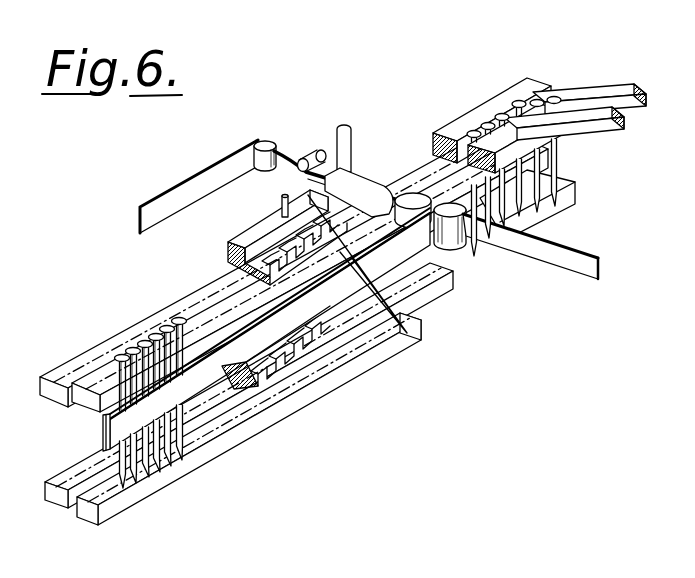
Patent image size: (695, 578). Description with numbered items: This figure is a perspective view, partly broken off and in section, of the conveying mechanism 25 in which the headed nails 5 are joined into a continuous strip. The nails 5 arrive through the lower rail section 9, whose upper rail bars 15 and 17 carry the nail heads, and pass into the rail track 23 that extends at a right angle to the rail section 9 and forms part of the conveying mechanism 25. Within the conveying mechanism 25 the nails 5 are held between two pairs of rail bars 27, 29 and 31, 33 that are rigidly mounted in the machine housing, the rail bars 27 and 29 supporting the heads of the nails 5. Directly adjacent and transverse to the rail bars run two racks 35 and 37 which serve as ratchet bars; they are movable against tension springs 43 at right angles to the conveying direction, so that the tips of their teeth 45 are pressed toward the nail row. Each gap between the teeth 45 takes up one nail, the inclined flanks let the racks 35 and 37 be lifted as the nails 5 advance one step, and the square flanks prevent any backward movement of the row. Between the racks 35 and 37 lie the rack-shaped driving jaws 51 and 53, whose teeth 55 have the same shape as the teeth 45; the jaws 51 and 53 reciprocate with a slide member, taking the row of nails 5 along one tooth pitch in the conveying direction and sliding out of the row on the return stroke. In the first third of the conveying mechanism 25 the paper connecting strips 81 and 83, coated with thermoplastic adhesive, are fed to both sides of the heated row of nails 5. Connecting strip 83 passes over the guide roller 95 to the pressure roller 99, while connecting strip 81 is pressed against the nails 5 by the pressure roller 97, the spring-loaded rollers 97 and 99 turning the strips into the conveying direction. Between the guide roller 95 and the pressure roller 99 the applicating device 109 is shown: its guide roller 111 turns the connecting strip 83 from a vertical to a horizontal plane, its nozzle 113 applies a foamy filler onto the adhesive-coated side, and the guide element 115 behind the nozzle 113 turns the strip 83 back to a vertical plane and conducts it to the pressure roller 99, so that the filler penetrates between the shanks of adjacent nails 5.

The nails 5 is at (537, 100).
The lower rail section 9 is at (597, 90).
The upper rail bar 15 is at (608, 120).
The upper rail bar 17 is at (638, 99).
The rail track 23 is at (465, 140).
The conveying mechanism 25 is at (430, 115).
The rail bar 27 is at (57, 370).
The rail bar 29 is at (95, 371).
The rail bar 31 is at (57, 497).
The rail bar 33 is at (87, 514).
The rack 35 is at (282, 296).
The rack 37 is at (276, 393).
The spring 43 is at (306, 208).
The teeth 45 is at (300, 248).
The driving jaw 51 is at (232, 273).
The driving jaw 53 is at (261, 388).
The teeth 55 is at (378, 277).
The connecting strip 81 is at (568, 254).
The connecting strip 83 is at (181, 183).
The guide roller 95 is at (265, 141).
The pressure roller 97 is at (452, 245).
The pressure roller 99 is at (400, 193).
The applicating device 109 is at (325, 115).
The guide roller 111 is at (310, 152).
The nozzle 113 is at (347, 142).
The guide element 115 is at (383, 220).